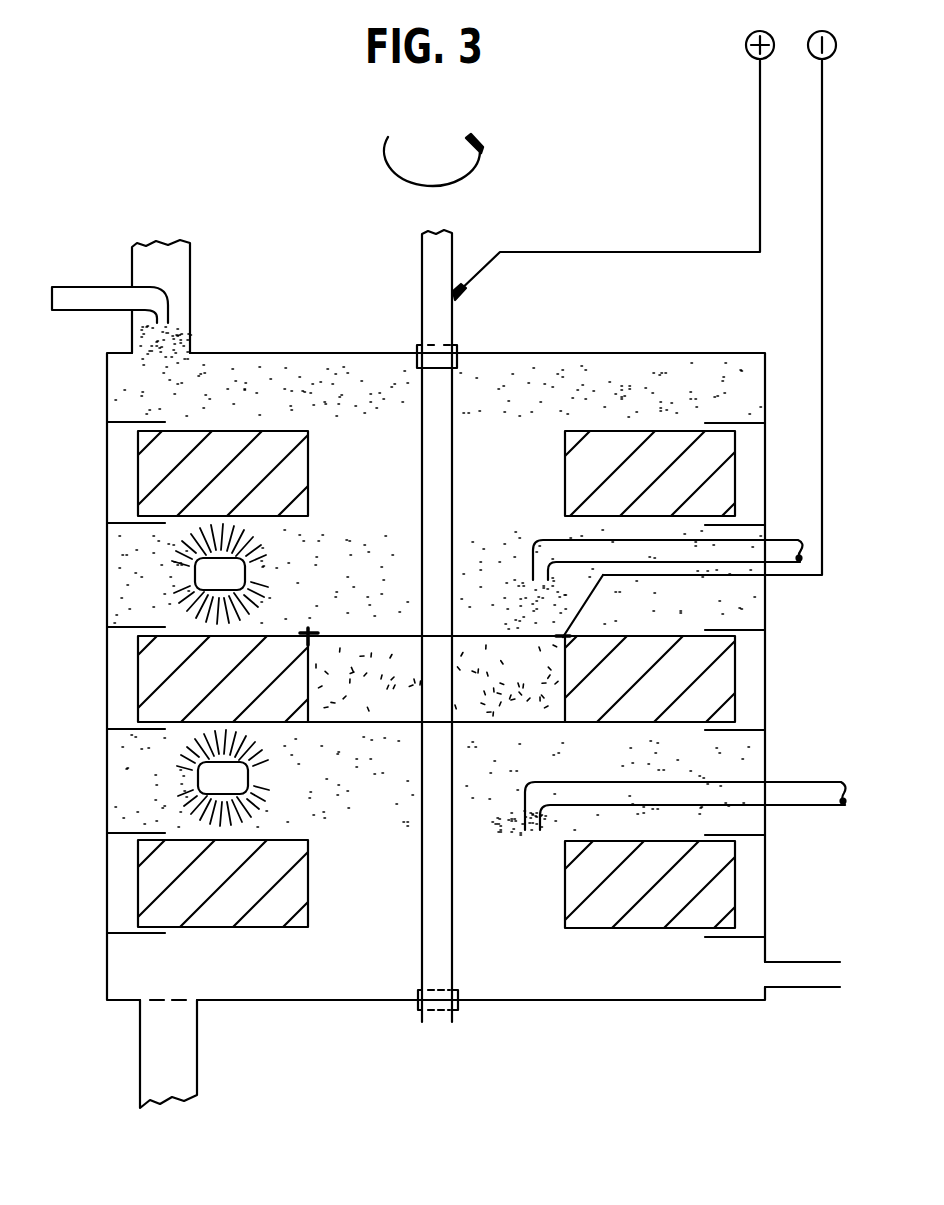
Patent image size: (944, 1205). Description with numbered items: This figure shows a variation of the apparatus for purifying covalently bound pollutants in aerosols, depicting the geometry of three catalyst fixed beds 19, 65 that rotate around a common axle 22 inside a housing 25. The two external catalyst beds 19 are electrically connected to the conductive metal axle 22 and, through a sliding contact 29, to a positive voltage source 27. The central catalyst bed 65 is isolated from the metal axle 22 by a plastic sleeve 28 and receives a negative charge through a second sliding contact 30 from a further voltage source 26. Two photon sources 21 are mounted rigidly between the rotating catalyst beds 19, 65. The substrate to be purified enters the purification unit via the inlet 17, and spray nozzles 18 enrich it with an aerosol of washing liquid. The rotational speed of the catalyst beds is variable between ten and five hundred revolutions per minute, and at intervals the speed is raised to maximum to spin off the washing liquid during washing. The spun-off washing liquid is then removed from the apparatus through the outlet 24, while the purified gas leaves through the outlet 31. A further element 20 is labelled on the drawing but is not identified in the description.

The inlet 17 is at (190, 272).
The spray nozzles 18 is at (96, 318).
The external catalyst fixed beds 19 is at (735, 447).
The intermediate plate 20 is at (730, 692).
The photon sources 21 is at (195, 573).
The common axle 22 is at (420, 290).
The outlet 24 is at (803, 990).
The housing 25 is at (668, 1001).
The voltage source 26 is at (812, 52).
The positive voltage source 27 is at (748, 52).
The plastic sleeve 28 is at (555, 700).
The sliding contact 29 is at (455, 292).
The sliding contact 30 is at (326, 619).
The outlet 31 is at (197, 1045).
The central catalyst bed 65 is at (175, 690).